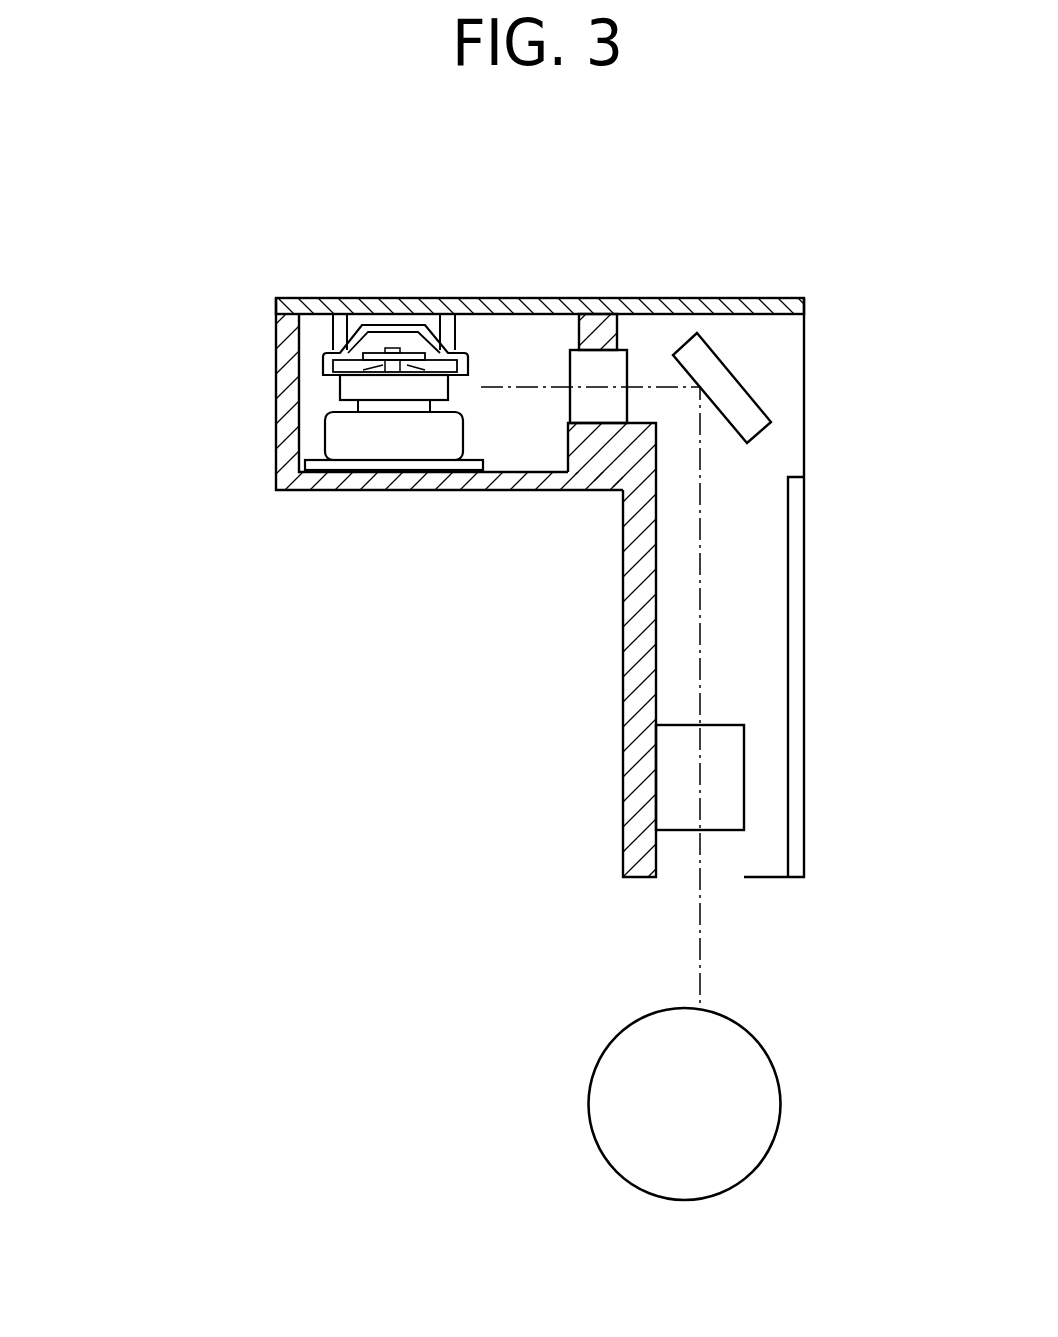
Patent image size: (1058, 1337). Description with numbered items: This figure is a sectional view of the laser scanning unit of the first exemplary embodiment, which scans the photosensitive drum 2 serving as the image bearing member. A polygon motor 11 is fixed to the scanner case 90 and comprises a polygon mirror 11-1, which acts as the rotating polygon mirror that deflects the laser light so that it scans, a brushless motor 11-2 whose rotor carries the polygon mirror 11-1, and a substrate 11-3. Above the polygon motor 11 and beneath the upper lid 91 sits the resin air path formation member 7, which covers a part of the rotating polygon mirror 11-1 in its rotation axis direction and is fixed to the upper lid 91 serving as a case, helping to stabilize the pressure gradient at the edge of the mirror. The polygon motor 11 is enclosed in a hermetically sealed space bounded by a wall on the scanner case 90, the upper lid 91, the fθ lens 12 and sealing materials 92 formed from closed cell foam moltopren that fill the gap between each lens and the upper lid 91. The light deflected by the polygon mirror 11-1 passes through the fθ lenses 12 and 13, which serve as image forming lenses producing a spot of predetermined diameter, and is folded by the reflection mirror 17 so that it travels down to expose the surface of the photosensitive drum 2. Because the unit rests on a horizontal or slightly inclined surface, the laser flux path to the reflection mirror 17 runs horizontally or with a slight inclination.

The photosensitive drum 2 is at (772, 1062).
The air path formation member 7 is at (450, 298).
The polygon motor 11 is at (503, 402).
The polygon mirror 11-1 is at (360, 388).
The brushless motor 11-2 is at (405, 440).
The substrate 11-3 is at (326, 465).
The fθ lens 12 is at (597, 408).
The fθ lens 13 is at (727, 724).
The reflection mirror 17 is at (722, 388).
The scanner case 90 is at (622, 792).
The upper lid 91 is at (720, 298).
The sealing materials 92 is at (598, 323).